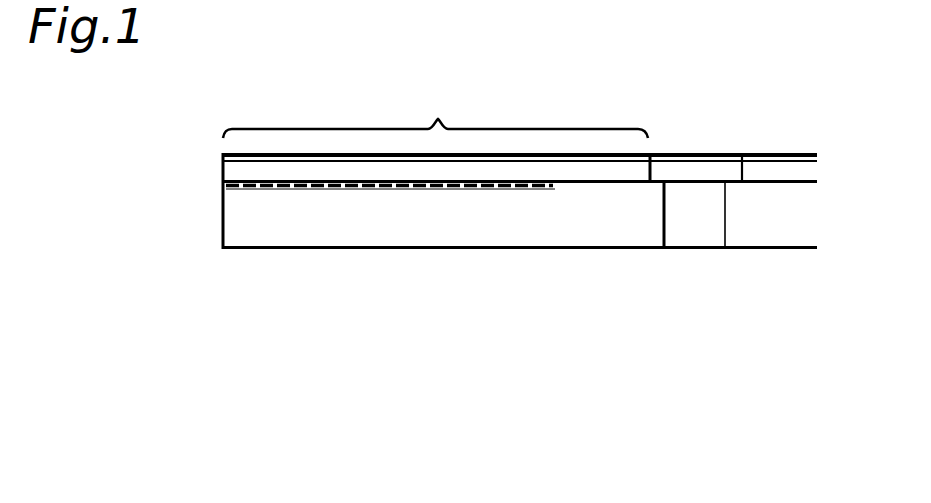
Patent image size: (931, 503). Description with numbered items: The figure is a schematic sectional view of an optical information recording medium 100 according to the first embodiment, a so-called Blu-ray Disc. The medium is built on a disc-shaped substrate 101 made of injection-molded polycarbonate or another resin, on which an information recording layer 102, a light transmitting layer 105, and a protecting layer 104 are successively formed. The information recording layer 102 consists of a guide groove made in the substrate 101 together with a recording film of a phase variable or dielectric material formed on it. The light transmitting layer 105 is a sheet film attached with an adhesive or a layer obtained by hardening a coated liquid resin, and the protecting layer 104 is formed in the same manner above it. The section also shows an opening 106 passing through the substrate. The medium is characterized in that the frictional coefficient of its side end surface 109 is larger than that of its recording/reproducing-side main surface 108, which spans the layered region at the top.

The optical information recording medium 100 is at (805, 114).
The substrate 101 is at (330, 208).
The information recording layer 102 is at (303, 186).
The protecting layer 104 is at (607, 162).
The light transmitting layer 105 is at (563, 168).
The through hole 106 is at (698, 237).
The recording/reproducing-side main surface 108 is at (435, 112).
The side end surface 109 is at (214, 209).